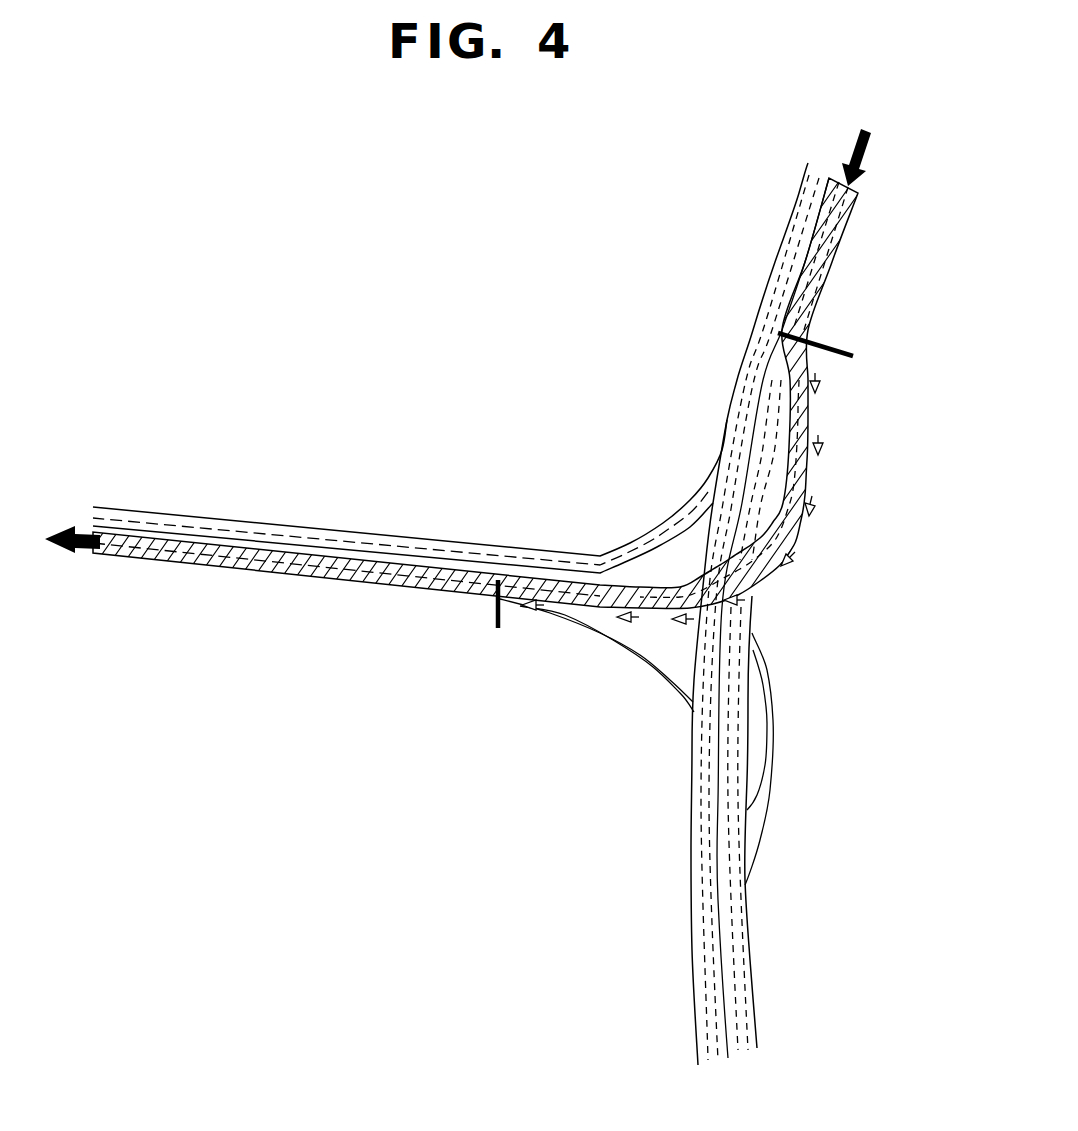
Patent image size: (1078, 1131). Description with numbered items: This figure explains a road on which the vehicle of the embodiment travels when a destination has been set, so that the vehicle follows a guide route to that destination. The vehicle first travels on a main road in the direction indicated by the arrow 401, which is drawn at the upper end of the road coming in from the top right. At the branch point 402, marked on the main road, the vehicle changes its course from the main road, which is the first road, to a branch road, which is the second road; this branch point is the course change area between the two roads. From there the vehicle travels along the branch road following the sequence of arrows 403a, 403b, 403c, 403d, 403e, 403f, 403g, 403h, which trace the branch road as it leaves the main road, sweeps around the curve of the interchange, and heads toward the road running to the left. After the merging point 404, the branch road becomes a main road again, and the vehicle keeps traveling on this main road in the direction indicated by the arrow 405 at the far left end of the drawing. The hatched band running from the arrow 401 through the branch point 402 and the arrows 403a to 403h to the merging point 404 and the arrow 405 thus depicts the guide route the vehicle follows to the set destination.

The arrow 401 is at (858, 158).
The branch point 402 is at (853, 355).
The arrow 403a is at (820, 384).
The arrow 403b is at (822, 446).
The arrow 403c is at (815, 510).
The arrow 403d is at (792, 562).
The arrow 403e is at (740, 604).
The arrow 403f is at (683, 625).
The arrow 403g is at (618, 620).
The arrow 403h is at (527, 608).
The merging point 404 is at (493, 627).
The arrow 405 is at (72, 528).